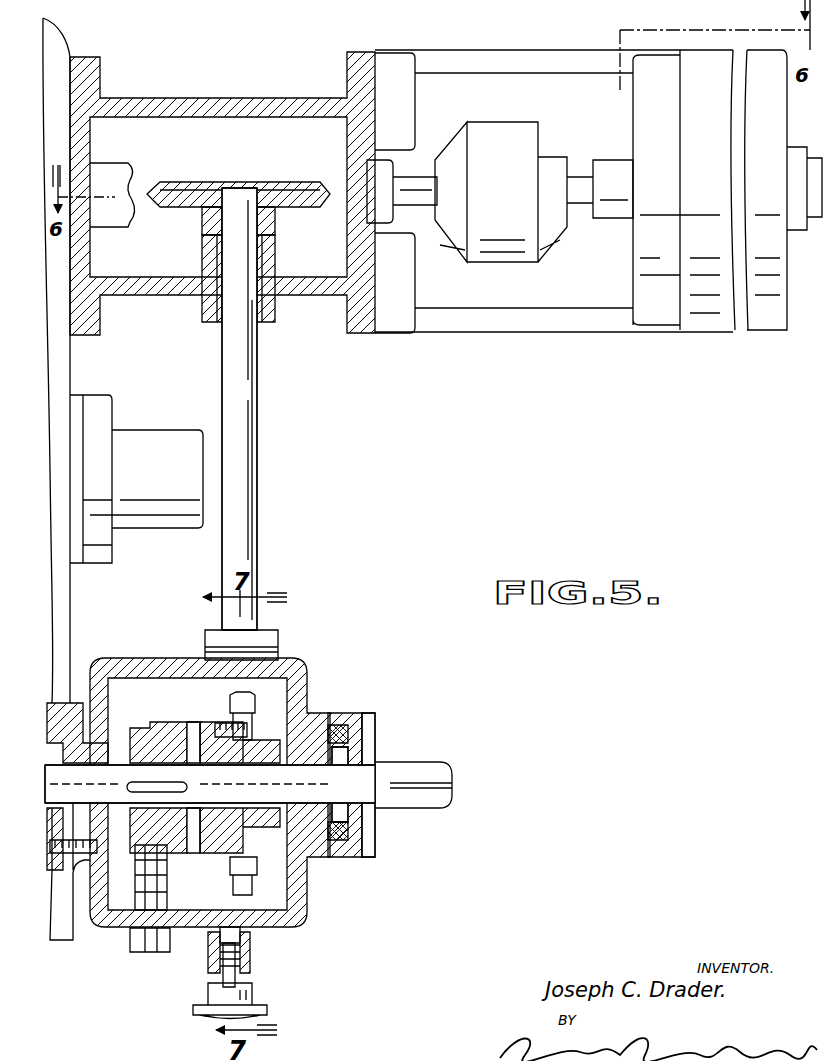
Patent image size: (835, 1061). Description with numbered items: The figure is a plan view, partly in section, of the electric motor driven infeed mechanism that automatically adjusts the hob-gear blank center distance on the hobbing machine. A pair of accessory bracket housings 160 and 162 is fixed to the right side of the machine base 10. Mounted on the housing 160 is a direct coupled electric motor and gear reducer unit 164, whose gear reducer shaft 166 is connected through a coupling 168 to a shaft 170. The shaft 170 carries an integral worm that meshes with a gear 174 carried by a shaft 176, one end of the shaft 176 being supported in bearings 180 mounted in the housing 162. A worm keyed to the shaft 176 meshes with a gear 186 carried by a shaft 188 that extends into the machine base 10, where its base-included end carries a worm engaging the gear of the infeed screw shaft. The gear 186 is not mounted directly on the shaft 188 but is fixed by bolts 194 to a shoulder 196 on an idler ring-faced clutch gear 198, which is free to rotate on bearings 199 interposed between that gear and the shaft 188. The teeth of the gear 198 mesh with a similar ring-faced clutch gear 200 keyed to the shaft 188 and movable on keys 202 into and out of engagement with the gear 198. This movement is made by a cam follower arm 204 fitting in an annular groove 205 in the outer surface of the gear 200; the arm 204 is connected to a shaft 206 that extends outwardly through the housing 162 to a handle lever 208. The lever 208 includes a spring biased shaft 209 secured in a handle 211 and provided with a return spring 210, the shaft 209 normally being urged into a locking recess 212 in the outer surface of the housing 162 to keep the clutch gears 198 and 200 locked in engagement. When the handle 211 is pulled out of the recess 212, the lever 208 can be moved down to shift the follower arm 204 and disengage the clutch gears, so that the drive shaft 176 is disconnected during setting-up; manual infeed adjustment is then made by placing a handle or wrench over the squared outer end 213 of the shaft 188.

The hobbing machine base 10 is at (70, 605).
The accessory bracket housing 160 is at (303, 77).
The accessory bracket housing 162 is at (313, 665).
The electric motor and gear reducer unit 164 is at (718, 178).
The gear reducer shaft 166 is at (577, 178).
The coupling 168 is at (535, 130).
The shaft 170 is at (408, 180).
The gear 174 is at (281, 182).
The shaft 176 is at (248, 415).
The bearings 180 is at (262, 258).
The gear 186 is at (250, 700).
The shaft 188 is at (210, 784).
The bolts 194 is at (255, 732).
The shoulder 196 is at (237, 866).
The idler ring-faced clutch gear 198 is at (327, 785).
The bearings 199 is at (305, 782).
The ring-faced clutch gear 200 is at (167, 855).
The keys 202 is at (187, 787).
The cam follower arm 204 is at (150, 845).
The annular groove 205 is at (145, 722).
The shaft 206 is at (130, 940).
The handle lever 208 is at (167, 947).
The spring biased shaft 209 is at (247, 982).
The return spring 210 is at (250, 957).
The handle 211 is at (252, 1000).
The locking recess 212 is at (232, 927).
The squared outer end 213 is at (427, 760).